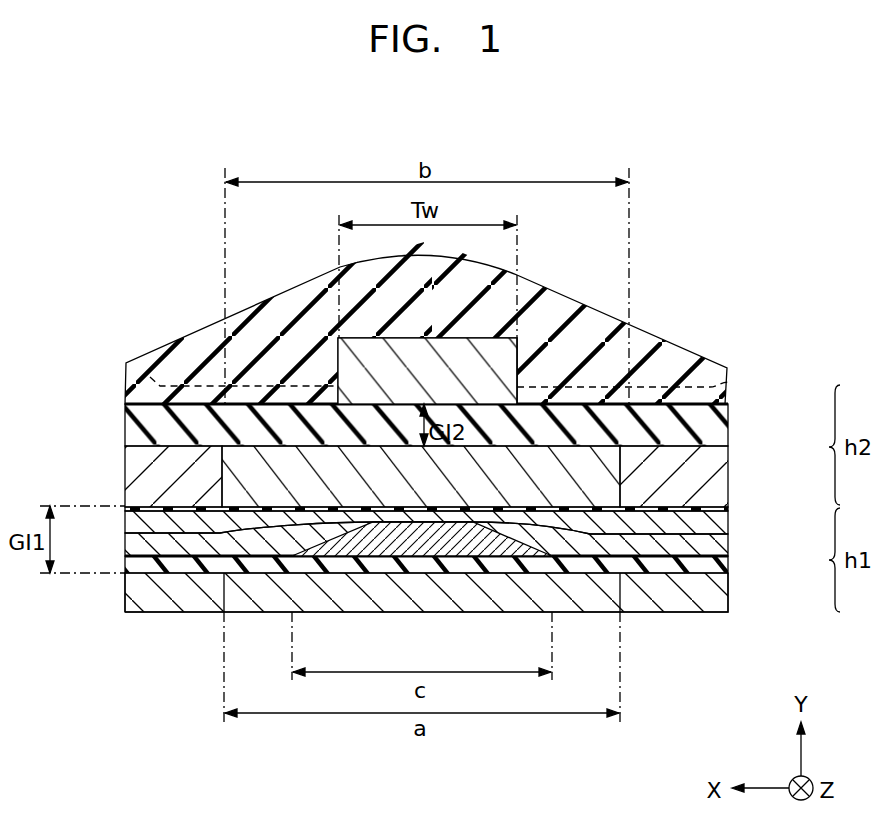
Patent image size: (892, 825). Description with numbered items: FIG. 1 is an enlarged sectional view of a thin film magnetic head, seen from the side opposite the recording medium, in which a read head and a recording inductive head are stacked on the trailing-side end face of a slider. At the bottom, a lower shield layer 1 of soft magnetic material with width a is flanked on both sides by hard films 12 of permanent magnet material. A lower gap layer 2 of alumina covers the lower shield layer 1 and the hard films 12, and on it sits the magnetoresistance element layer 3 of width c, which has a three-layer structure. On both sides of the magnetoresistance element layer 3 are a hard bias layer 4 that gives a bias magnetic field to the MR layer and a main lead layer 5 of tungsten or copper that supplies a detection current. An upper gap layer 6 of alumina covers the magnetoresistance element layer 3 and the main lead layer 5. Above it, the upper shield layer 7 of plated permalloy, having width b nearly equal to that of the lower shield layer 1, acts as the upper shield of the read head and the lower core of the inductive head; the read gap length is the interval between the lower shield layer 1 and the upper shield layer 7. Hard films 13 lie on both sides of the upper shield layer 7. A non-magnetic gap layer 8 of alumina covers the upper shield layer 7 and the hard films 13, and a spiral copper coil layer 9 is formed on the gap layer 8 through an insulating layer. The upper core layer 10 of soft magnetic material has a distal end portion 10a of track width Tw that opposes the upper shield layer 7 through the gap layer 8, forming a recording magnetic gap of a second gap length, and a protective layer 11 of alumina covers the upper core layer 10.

The lower shield layer 1 is at (592, 600).
The lower gap layer 2 is at (715, 566).
The magnetoresistance element layer 3 is at (423, 545).
The hard bias layer 4 is at (135, 545).
The main lead layer 5 is at (135, 520).
The upper gap layer 6 is at (712, 505).
The upper shield layer 7 is at (545, 470).
The gap layer 8 is at (712, 428).
The coil layer 9 is at (150, 377).
The upper core layer 10 is at (338, 372).
The distal end portion 10a is at (519, 358).
The protective layer 11 is at (668, 358).
The hard films 12 is at (185, 602).
The hard films 13 is at (135, 462).